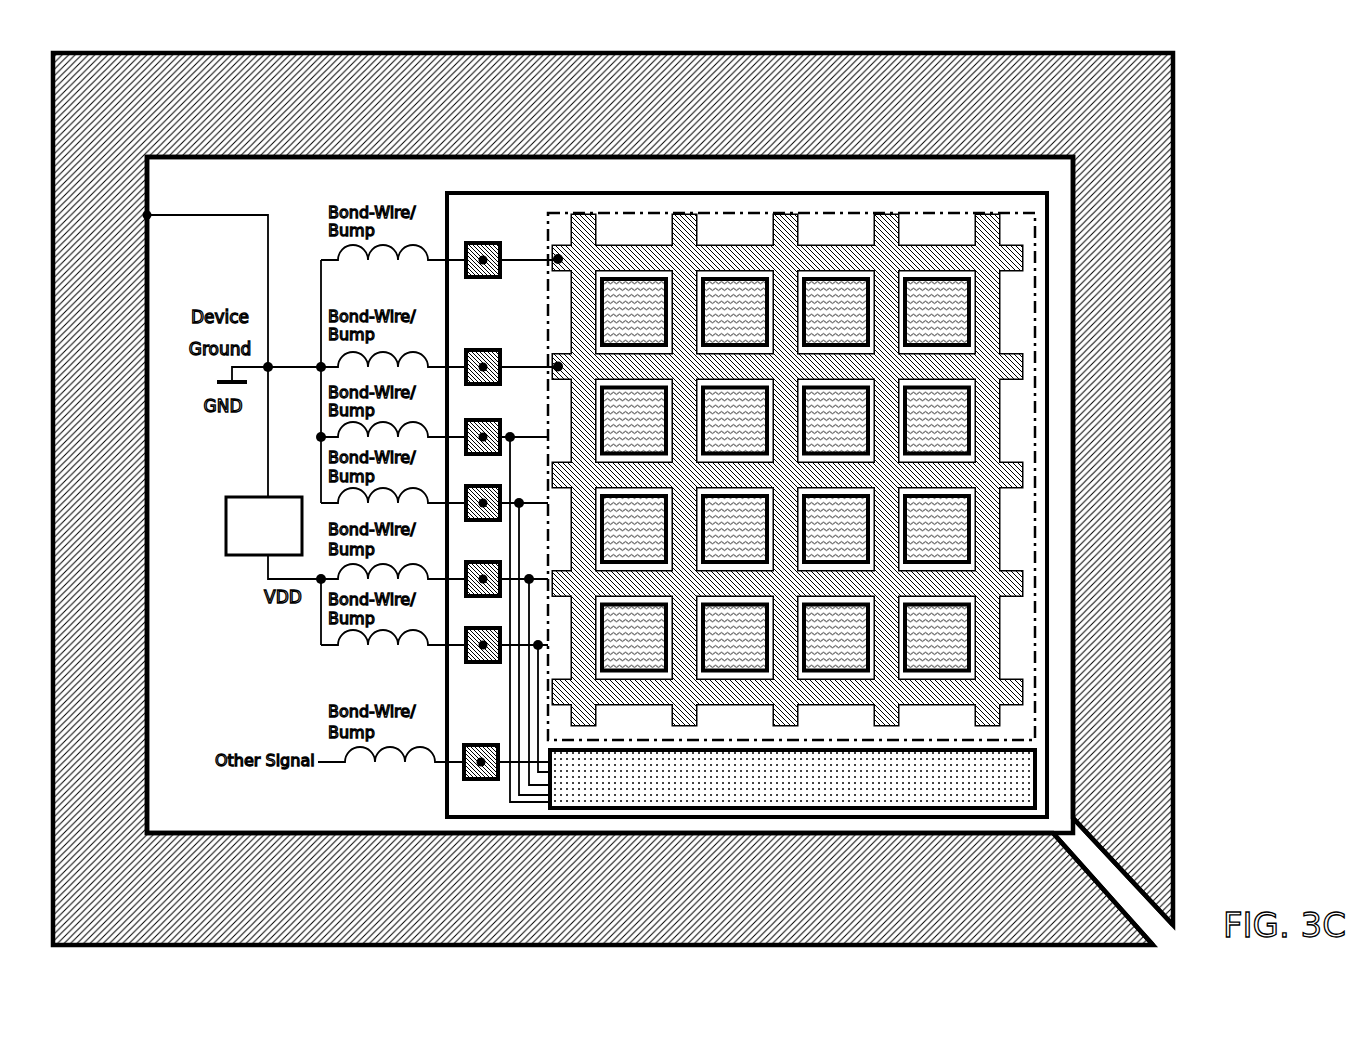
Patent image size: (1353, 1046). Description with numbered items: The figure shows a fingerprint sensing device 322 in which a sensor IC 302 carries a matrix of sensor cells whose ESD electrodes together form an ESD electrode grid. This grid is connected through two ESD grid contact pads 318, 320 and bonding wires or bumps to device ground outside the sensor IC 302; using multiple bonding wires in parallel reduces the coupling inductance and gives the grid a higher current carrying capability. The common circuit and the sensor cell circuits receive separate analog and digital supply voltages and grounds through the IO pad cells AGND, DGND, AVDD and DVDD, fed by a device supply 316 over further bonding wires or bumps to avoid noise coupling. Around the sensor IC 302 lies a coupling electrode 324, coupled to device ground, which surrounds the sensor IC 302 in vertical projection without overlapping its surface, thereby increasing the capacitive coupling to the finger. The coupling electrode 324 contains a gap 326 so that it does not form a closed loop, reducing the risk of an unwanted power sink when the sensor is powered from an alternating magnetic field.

The sensor IC 302 is at (688, 506).
The device supply 316 is at (237, 557).
The ESD grid contact pad 318 is at (502, 277).
The ESD grid contact pad 320 is at (500, 382).
The fingerprint sensing device 322 is at (1204, 93).
The coupling electrode 324 is at (1147, 145).
The gap 326 is at (1110, 875).